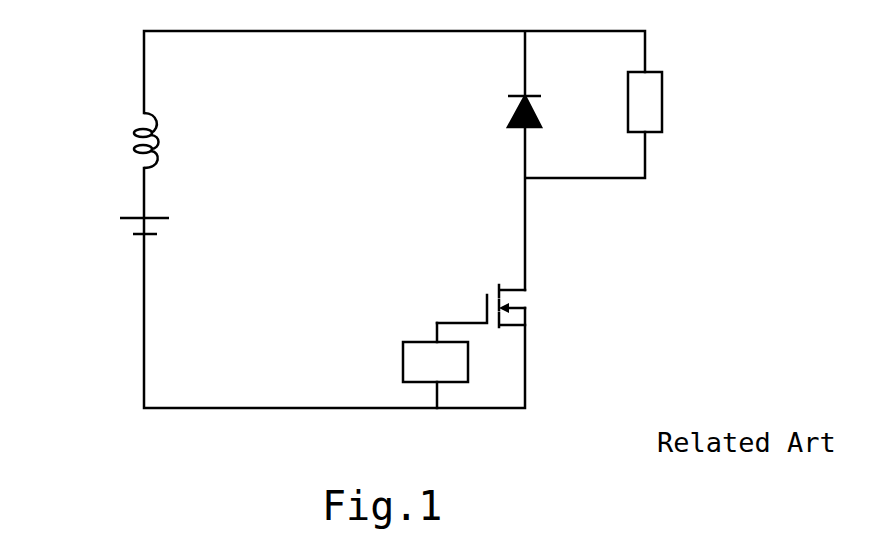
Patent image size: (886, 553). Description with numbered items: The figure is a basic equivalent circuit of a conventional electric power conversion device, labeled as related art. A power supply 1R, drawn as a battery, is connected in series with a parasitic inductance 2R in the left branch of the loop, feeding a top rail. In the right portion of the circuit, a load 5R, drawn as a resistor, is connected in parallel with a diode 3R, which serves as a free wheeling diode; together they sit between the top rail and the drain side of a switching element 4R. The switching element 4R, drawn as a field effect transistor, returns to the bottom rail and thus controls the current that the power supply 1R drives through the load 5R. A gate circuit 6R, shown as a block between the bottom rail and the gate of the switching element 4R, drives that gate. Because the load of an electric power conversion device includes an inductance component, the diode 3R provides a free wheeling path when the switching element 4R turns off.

The power supply 1R is at (127, 231).
The parasitic inductance 2R is at (123, 145).
The diode 3R is at (534, 105).
The switching element 4R is at (528, 303).
The load 5R is at (668, 100).
The gate circuit 6R is at (398, 362).